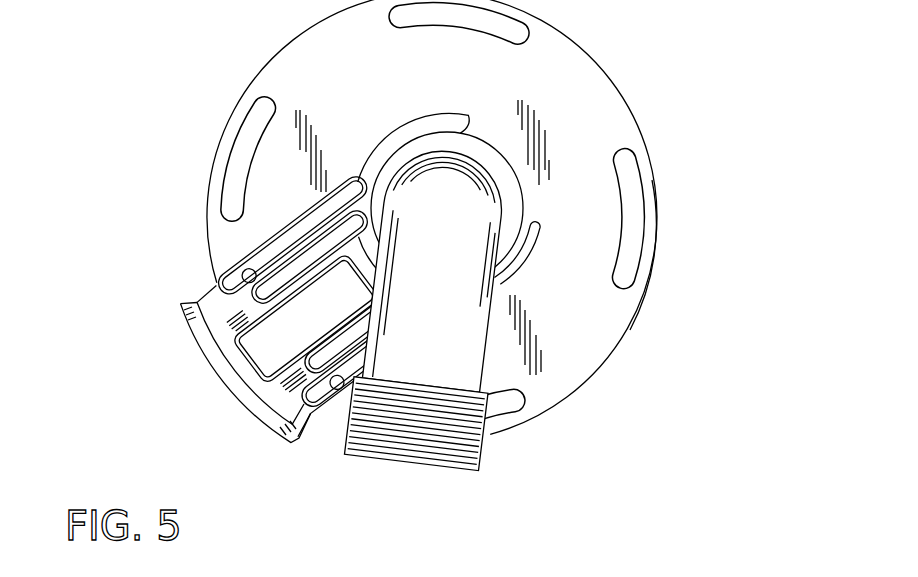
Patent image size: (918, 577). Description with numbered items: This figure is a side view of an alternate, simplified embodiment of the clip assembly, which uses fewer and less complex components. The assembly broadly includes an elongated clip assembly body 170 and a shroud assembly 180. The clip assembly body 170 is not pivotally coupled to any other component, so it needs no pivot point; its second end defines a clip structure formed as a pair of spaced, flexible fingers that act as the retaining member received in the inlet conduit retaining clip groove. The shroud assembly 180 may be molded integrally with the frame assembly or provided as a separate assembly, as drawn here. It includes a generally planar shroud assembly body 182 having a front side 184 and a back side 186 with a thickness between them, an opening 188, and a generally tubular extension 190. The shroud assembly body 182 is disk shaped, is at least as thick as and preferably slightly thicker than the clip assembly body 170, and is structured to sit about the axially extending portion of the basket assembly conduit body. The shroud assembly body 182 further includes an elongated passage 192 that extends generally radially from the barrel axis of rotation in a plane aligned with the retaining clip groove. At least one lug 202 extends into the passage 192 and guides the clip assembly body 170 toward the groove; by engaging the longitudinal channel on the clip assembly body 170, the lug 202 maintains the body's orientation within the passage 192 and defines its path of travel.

The clip assembly body 170 is at (285, 400).
The shroud assembly 180 is at (578, 350).
The shroud assembly body 182 is at (606, 312).
The front side 184 is at (542, 385).
The back side 186 is at (657, 212).
The opening 188 is at (184, 268).
The tubular extension 190 is at (487, 172).
The elongated passage 192 is at (375, 252).
The lug 202 is at (243, 281).